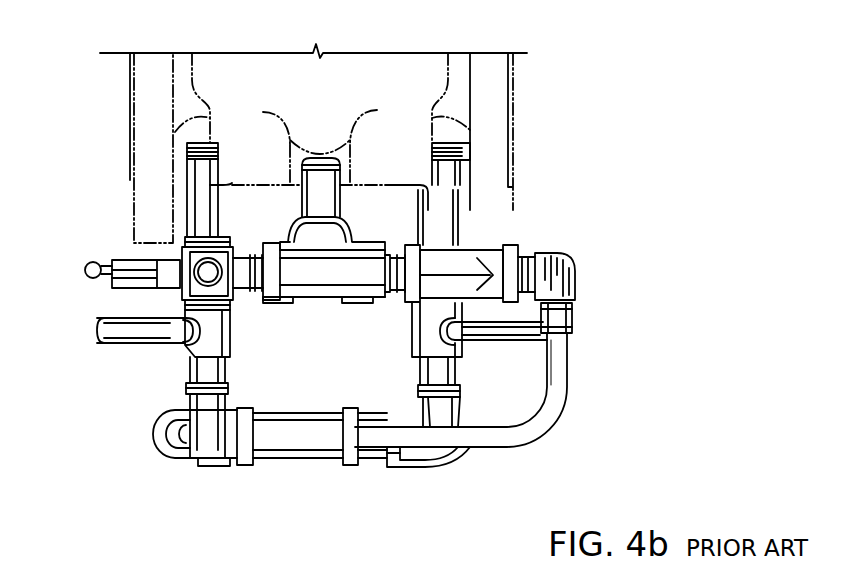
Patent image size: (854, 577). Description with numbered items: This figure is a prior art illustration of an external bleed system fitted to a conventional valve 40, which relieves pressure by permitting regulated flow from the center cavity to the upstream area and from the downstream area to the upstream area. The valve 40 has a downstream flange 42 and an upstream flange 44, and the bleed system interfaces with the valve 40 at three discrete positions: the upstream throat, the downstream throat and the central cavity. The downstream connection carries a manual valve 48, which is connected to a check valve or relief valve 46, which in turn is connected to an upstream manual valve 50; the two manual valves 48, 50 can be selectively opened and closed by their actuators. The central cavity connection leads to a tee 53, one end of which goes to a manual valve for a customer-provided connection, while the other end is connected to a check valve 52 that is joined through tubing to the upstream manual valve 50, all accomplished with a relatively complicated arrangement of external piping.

The valve 40 is at (313, 130).
The downstream flange 42 is at (150, 180).
The upstream flange 44 is at (487, 145).
The check valve or relief valve 46 is at (265, 435).
The manual valve 48 is at (190, 365).
The manual valve 50 is at (462, 348).
The check valve 52 is at (478, 252).
The tee 53 is at (322, 273).